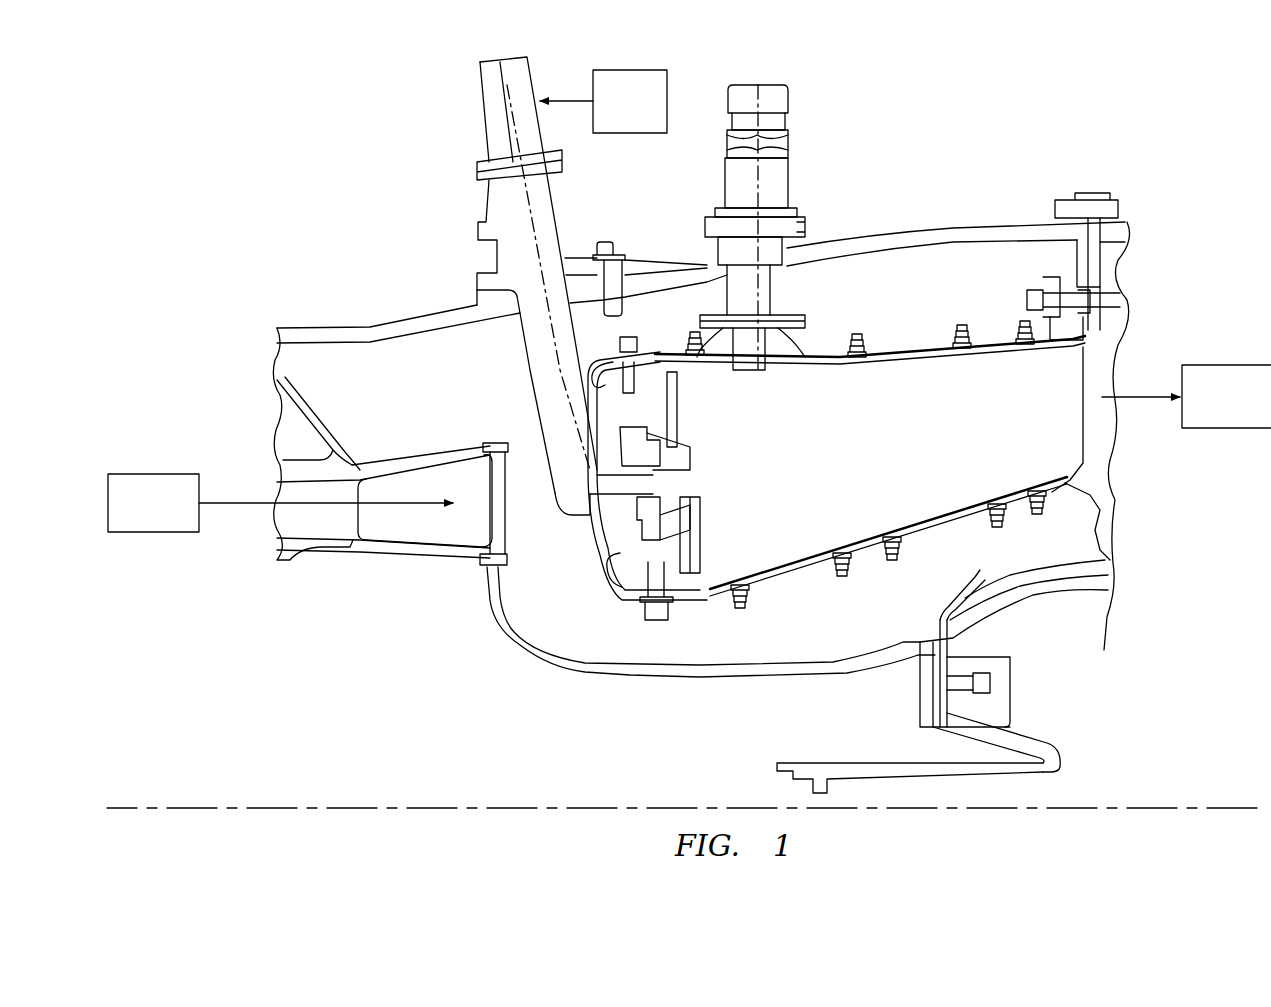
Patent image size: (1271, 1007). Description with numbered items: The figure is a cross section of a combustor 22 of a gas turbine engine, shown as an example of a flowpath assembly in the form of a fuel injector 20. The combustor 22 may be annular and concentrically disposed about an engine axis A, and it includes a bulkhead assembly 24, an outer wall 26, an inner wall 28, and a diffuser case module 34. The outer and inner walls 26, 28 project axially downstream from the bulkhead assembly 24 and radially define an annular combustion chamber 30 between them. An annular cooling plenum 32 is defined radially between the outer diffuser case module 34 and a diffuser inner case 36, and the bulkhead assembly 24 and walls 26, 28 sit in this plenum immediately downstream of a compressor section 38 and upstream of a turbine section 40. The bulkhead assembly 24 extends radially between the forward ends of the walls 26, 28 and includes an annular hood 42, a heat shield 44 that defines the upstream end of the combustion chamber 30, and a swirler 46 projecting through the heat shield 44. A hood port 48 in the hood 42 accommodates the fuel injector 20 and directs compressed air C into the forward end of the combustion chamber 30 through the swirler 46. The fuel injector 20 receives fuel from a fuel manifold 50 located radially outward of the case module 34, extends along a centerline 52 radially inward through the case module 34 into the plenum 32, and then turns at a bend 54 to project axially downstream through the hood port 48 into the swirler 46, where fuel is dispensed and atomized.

The fuel injector 20 is at (520, 388).
The combustor 22 is at (1012, 133).
The bulkhead assembly 24 is at (590, 574).
The outer wall 26 is at (888, 357).
The inner wall 28 is at (923, 523).
The combustion chamber 30 is at (880, 458).
The cooling plenum 32 is at (494, 371).
The diffuser case module 34 is at (993, 233).
The diffuser inner case 36 is at (773, 675).
The compressor section 38 is at (167, 518).
The turbine section 40 is at (1240, 409).
The hood 42 is at (610, 590).
The heat shield 44 is at (700, 540).
The swirler 46 is at (693, 493).
The hood port 48 is at (588, 527).
The fuel manifold 50 is at (644, 117).
The centerline 52 is at (507, 90).
The bend 54 is at (553, 493).
The engine axis A is at (1110, 805).
The compressed air C is at (407, 503).